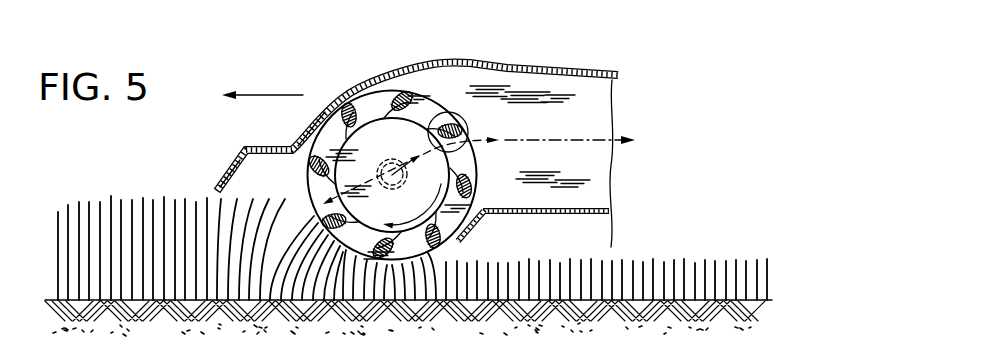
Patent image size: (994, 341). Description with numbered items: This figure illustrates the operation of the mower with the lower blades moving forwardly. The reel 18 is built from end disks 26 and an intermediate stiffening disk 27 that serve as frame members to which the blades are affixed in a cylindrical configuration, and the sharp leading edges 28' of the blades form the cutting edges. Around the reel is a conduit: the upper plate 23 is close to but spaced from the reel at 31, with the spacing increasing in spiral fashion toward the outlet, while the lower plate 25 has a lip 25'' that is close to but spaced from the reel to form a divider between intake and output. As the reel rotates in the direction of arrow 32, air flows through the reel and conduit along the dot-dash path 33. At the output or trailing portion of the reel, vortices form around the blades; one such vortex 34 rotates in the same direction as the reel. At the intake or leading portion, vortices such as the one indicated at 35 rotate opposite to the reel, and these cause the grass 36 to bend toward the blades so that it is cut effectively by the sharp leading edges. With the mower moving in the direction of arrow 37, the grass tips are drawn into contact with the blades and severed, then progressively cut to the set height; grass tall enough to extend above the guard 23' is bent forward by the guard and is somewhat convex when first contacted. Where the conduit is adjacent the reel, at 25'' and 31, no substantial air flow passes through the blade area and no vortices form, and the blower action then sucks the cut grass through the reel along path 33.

The reel 18 is at (429, 85).
The upper plate 23 is at (417, 111).
The guard 23' is at (206, 170).
The lower plate 25 is at (546, 227).
The lip 25'' is at (490, 230).
The end disks 26 is at (373, 107).
The intermediate stiffening disk 27 is at (398, 147).
The leading edges 28' is at (418, 131).
The spacing point 31 is at (316, 114).
The arrow of reel rotation 32 is at (423, 206).
The dot-dash air flow path 33 is at (540, 139).
The output vortex 34 is at (462, 116).
The intake vortex 35 is at (352, 202).
The grass 36 is at (297, 203).
The arrow of mower travel 37 is at (266, 94).